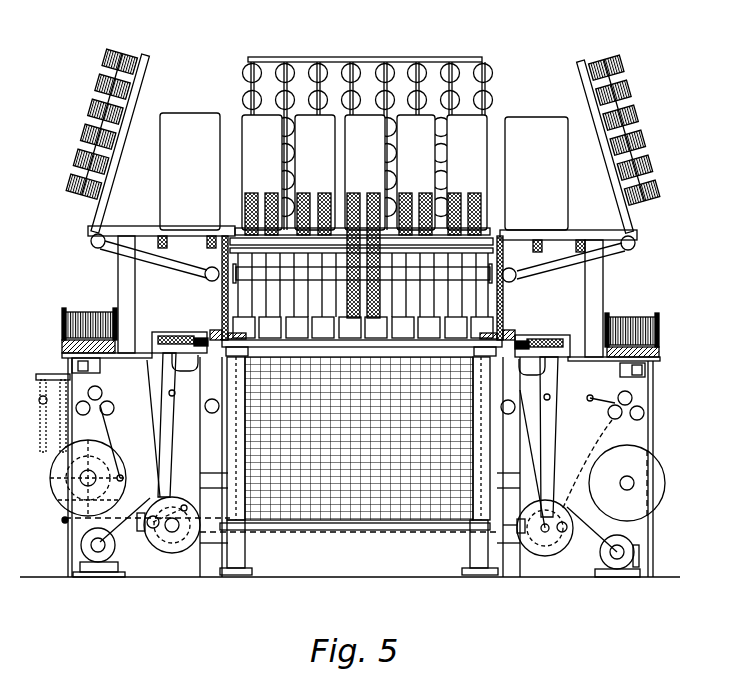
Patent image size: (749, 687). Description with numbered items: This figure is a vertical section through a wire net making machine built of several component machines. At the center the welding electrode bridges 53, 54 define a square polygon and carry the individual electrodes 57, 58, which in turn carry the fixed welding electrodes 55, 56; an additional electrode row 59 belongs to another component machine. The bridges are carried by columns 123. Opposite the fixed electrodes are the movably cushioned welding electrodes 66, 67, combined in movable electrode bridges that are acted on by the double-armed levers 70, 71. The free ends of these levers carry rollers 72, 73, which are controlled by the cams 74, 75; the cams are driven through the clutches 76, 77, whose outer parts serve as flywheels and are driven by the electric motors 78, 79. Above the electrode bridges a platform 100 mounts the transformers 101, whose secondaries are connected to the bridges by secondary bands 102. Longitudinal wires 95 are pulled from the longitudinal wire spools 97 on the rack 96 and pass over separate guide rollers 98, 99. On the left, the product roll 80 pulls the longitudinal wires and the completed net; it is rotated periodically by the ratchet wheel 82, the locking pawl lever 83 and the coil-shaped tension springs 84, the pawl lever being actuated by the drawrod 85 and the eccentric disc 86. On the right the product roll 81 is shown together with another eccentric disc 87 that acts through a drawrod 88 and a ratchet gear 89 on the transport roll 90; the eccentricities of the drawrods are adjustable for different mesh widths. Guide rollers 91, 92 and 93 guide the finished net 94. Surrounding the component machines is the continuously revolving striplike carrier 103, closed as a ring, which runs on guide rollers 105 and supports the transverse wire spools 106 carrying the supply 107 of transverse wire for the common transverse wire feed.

The welding electrode bridge 53 is at (221, 360).
The welding electrode bridge 54 is at (505, 358).
The fixed welding electrode 55 is at (216, 332).
The fixed welding electrode 56 is at (510, 334).
The individual electrode 57 is at (232, 333).
The individual electrode 58 is at (500, 333).
The electrode row 59 is at (455, 322).
The movable cushioned welding electrode 66 is at (216, 338).
The movable cushioned welding electrode 67 is at (522, 334).
The double-armed lever 70 is at (165, 448).
The double-armed lever 71 is at (552, 440).
The roller 72 is at (156, 528).
The roller 73 is at (561, 535).
The cam 74 is at (180, 534).
The cam 75 is at (538, 536).
The clutch 76 is at (195, 545).
The clutch 77 is at (570, 545).
The electric motor 78 is at (98, 562).
The electric motor 79 is at (622, 566).
The product roll 80 is at (52, 489).
The product roll 81 is at (658, 508).
The ratchet wheel 82 is at (60, 502).
The locking pawl lever 83 is at (122, 481).
The coil-shaped tension spring 84 is at (62, 404).
The drawrod 85 is at (125, 526).
The eccentric disc 86 is at (178, 497).
The eccentric disc 87 is at (530, 545).
The drawrod 88 is at (586, 462).
The ratchet gear 89 is at (587, 393).
The transport roll 90 is at (110, 415).
The guide roller 91 is at (212, 414).
The guide roller 92 is at (103, 391).
The guide roller 93 is at (80, 402).
The finished net 94 is at (184, 410).
The longitudinal wire 95 is at (93, 210).
The rack 96 is at (150, 62).
The longitudinal wire spool 97 is at (93, 138).
The guide roller 98 is at (95, 246).
The guide roller 99 is at (205, 276).
The platform 100 is at (138, 225).
The transformer 101 is at (250, 128).
The secondary band 102 is at (373, 193).
The striplike carrier 103 is at (66, 345).
The guide roller 105 is at (100, 366).
The transverse wire spool 106 is at (63, 315).
The supply of transverse wire 107 is at (96, 314).
The column 123 is at (242, 545).